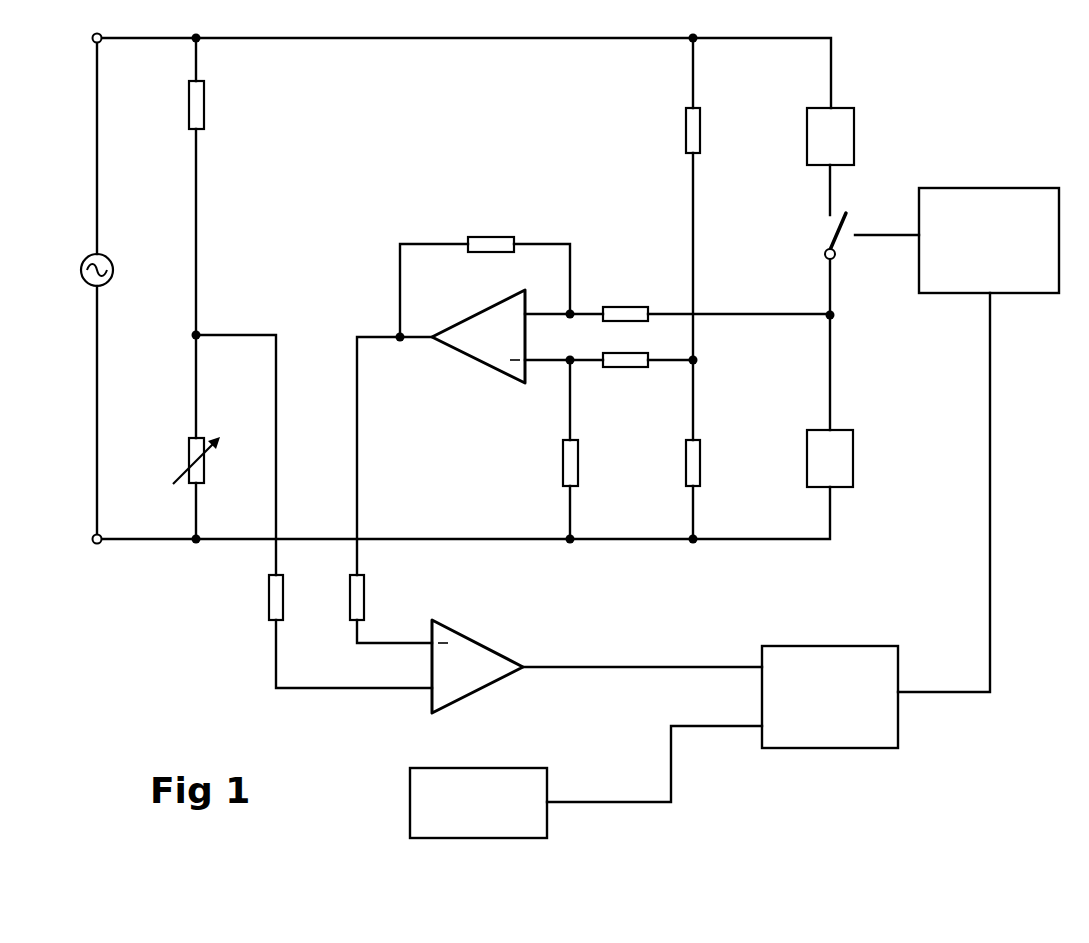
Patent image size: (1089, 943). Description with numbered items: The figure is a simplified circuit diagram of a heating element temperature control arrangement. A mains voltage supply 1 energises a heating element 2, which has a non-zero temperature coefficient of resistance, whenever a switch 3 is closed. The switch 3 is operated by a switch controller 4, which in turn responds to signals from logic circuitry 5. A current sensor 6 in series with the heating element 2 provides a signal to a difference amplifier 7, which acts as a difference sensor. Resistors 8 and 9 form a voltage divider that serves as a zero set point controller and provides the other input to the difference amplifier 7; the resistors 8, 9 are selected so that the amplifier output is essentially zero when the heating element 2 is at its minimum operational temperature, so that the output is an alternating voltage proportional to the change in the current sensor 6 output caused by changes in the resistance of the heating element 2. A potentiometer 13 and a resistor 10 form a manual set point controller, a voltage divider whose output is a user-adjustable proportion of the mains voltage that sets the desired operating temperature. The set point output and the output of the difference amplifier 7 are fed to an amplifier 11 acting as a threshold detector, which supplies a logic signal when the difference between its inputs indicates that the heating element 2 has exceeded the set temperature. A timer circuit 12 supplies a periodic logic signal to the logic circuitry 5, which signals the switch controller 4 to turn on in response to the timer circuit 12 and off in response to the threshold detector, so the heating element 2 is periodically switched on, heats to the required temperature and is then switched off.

The mains voltage supply 1 is at (118, 272).
The heating element 2 is at (854, 140).
The switch 3 is at (820, 228).
The switch controller 4 is at (950, 188).
The logic circuitry 5 is at (840, 646).
The current sensor 6 is at (853, 462).
The difference amplifier 7 is at (490, 353).
The resistor 8 is at (686, 138).
The resistor 9 is at (700, 462).
The resistor 10 is at (204, 106).
The amplifier 11 is at (470, 657).
The timer circuit 12 is at (410, 795).
The potentiometer 13 is at (189, 456).